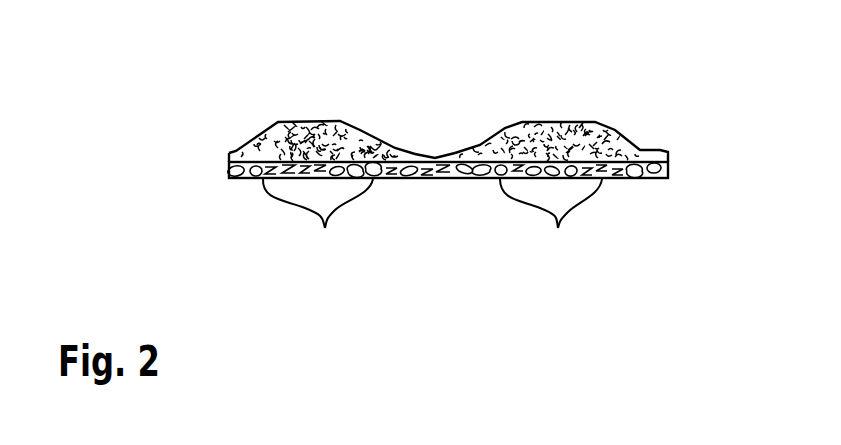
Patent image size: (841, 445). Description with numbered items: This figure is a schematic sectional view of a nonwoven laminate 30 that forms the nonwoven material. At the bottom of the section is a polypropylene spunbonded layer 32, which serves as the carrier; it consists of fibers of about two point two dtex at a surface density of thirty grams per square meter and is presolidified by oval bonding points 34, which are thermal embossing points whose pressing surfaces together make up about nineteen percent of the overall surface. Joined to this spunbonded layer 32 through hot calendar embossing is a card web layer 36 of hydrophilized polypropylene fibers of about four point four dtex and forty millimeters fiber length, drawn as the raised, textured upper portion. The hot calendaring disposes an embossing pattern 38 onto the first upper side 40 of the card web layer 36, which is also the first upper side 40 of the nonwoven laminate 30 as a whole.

The nonwoven laminate 30 is at (253, 112).
The polypropylene spunbonded layer 32 is at (218, 170).
The oval bonding points 34 is at (432, 224).
The card web layer 36 is at (218, 154).
The embossing pattern 38 is at (441, 124).
The first upper side 40 is at (387, 110).